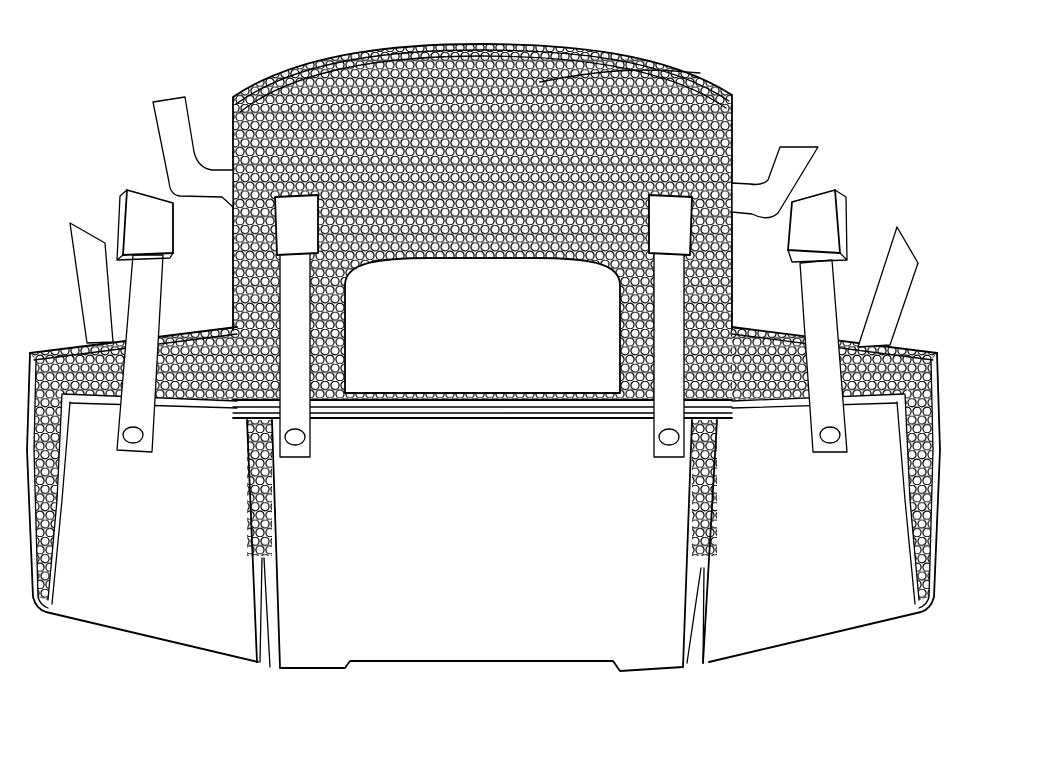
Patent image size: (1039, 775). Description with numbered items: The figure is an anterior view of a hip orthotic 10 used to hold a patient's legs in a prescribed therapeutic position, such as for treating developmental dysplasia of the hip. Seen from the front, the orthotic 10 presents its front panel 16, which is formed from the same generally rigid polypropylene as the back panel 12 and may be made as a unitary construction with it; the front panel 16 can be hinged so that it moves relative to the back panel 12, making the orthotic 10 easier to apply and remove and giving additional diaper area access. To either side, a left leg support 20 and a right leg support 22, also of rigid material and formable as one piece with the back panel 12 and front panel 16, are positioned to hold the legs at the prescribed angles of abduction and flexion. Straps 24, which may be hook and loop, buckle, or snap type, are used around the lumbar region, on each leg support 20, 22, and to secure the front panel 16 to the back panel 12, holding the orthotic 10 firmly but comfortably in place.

The hip orthotic 10 is at (148, 60).
The back panel 12 is at (660, 66).
The front panel 16 is at (635, 627).
The left leg support 20 is at (833, 632).
The right leg support 22 is at (127, 630).
The straps 24 is at (137, 213).